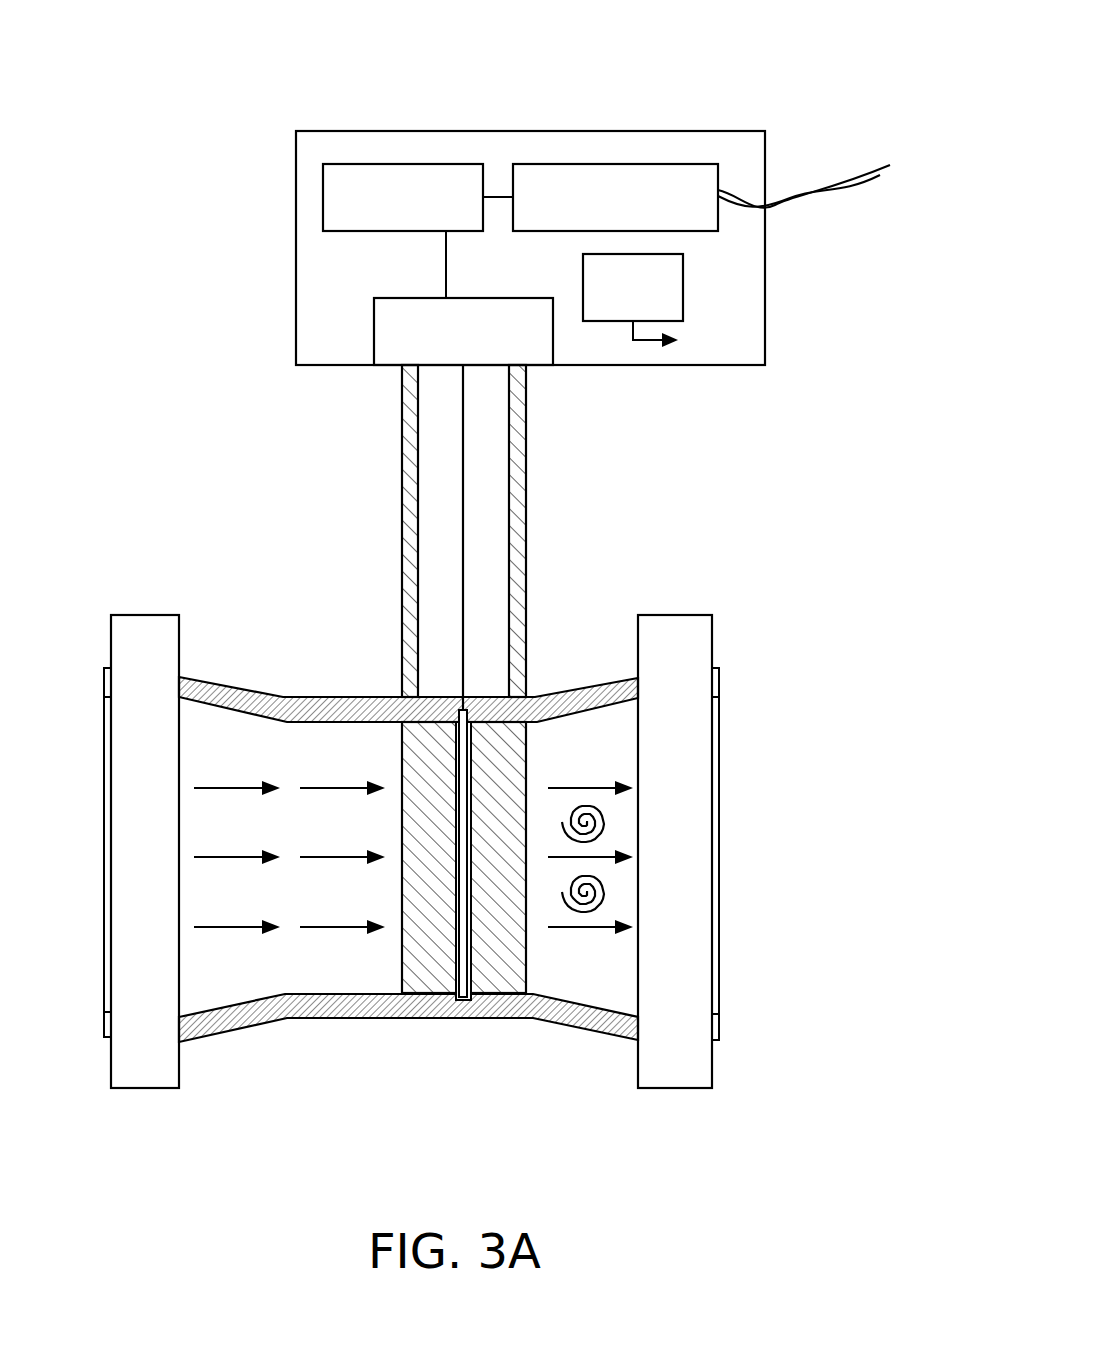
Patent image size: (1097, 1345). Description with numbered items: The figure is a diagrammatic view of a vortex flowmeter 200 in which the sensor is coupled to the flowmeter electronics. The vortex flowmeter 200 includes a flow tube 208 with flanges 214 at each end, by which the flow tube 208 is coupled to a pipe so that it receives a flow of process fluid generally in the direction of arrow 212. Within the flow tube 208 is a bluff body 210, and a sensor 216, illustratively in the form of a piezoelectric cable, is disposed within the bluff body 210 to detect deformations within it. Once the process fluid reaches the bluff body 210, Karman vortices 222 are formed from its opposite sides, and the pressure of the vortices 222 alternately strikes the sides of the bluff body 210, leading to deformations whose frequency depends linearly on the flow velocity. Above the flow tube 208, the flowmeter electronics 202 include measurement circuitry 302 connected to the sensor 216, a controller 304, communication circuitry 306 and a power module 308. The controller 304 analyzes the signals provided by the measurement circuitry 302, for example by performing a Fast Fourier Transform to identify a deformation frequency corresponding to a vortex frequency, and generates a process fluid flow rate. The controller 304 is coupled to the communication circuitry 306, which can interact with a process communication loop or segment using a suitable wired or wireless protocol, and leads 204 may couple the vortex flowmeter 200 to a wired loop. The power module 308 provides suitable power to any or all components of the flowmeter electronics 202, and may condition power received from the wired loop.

The vortex flowmeter 200 is at (795, 66).
The flowmeter electronics 202 is at (492, 131).
The leads 204 is at (810, 203).
The flow tube 208 is at (552, 693).
The bluff body 210 is at (402, 967).
The arrow 212 is at (225, 927).
The flanges 214 is at (142, 1075).
The sensor 216 is at (462, 778).
The Karman vortices 222 is at (605, 827).
The measurement circuitry 302 is at (463, 331).
The controller 304 is at (403, 197).
The communication circuitry 306 is at (615, 197).
The power module 308 is at (633, 287).